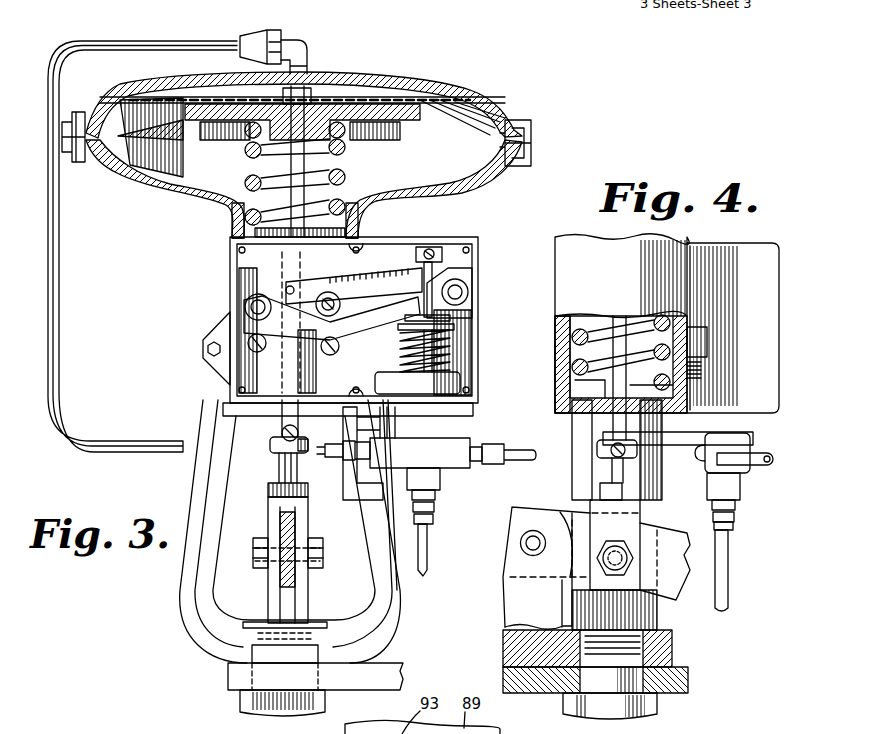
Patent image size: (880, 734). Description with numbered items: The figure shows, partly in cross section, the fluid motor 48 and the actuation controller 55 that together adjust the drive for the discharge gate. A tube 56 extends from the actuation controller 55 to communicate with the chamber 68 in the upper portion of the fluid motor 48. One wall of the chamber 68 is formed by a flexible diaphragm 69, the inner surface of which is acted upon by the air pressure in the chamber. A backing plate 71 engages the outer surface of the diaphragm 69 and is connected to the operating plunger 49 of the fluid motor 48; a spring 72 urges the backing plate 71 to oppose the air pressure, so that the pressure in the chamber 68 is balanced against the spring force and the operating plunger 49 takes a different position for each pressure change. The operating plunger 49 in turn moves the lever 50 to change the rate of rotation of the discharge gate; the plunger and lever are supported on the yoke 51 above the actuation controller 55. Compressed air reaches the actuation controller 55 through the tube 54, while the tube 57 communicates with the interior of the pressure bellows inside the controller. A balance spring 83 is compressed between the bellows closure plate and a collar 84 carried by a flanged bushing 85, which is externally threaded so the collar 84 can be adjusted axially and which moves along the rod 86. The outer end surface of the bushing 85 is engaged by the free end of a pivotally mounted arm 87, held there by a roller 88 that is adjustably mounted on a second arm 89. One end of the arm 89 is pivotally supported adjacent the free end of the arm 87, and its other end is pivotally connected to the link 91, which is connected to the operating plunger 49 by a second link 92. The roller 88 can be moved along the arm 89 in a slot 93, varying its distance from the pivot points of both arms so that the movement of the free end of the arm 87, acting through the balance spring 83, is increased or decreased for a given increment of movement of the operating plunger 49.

In FIG. 3, the fluid motor 48 is at (296, 143).
In FIG. 4, the fluid motor 48 is at (583, 245).
In FIG. 3, the operating plunger 49 is at (279, 465).
In FIG. 4, the operating plunger 49 is at (557, 355).
In FIG. 3, the lever 50 is at (310, 585).
In FIG. 4, the lever 50 is at (554, 507).
In FIG. 3, the yoke 51 is at (268, 598).
In FIG. 4, the yoke 51 is at (517, 605).
In FIG. 3, the tube 54 is at (428, 549).
In FIG. 4, the tube 54 is at (729, 544).
In FIG. 3, the actuation controller 55 is at (454, 471).
In FIG. 4, the actuation controller 55 is at (765, 445).
In FIG. 3, the tube 56 is at (60, 317).
In FIG. 4, the tube 56 is at (773, 459).
In FIG. 3, the tube 57 is at (519, 450).
In FIG. 3, the chamber 68 is at (353, 78).
In FIG. 3, the flexible diaphragm 69 is at (398, 112).
In FIG. 3, the backing plate 71 is at (197, 110).
In FIG. 3, the spring 72 is at (365, 214).
In FIG. 4, the spring 72 is at (558, 380).
In FIG. 3, the balance spring 83 is at (447, 352).
In FIG. 3, the collar 84 is at (437, 330).
In FIG. 3, the flanged bushing 85 is at (436, 318).
In FIG. 3, the rod 86 is at (442, 265).
In FIG. 3, the arm 87 is at (358, 320).
In FIG. 3, the roller 88 is at (328, 292).
In FIG. 3, the arm 89 is at (380, 277).
In FIG. 3, the link 91 is at (233, 377).
In FIG. 4, the link 91 is at (720, 406).
In FIG. 3, the link 92 is at (285, 432).
In FIG. 4, the link 92 is at (682, 447).
In FIG. 3, the slot 93 is at (362, 298).